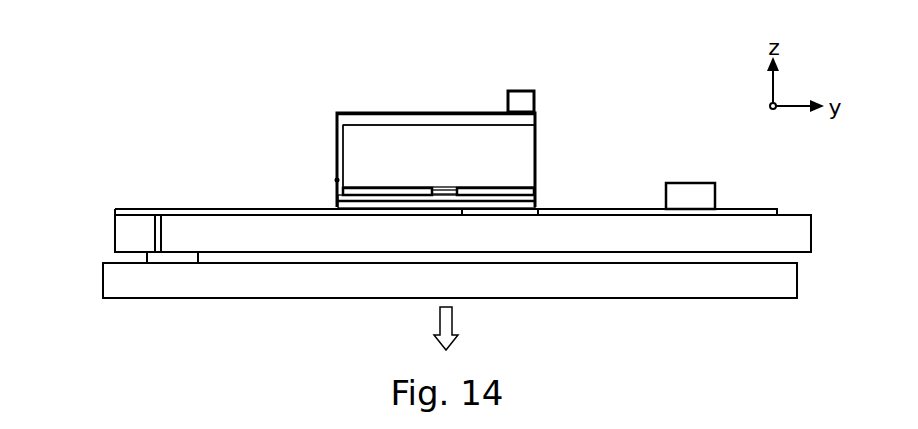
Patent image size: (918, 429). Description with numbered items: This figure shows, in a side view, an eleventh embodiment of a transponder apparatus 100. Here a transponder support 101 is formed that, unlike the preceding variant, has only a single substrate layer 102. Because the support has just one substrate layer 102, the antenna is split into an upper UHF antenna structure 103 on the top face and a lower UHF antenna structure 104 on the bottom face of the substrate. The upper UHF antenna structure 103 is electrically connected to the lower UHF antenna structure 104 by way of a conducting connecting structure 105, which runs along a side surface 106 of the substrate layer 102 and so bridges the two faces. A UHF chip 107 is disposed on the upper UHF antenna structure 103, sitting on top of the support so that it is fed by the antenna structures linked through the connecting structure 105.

The transponder apparatus 100 is at (192, 103).
The transponder support 101 is at (558, 103).
The substrate layer 102 is at (520, 156).
The upper UHF antenna structure 103 is at (394, 123).
The lower UHF antenna structure 104 is at (372, 188).
The conducting connecting structure 105 is at (337, 163).
The side surface 106 is at (335, 180).
The UHF chip 107 is at (518, 90).